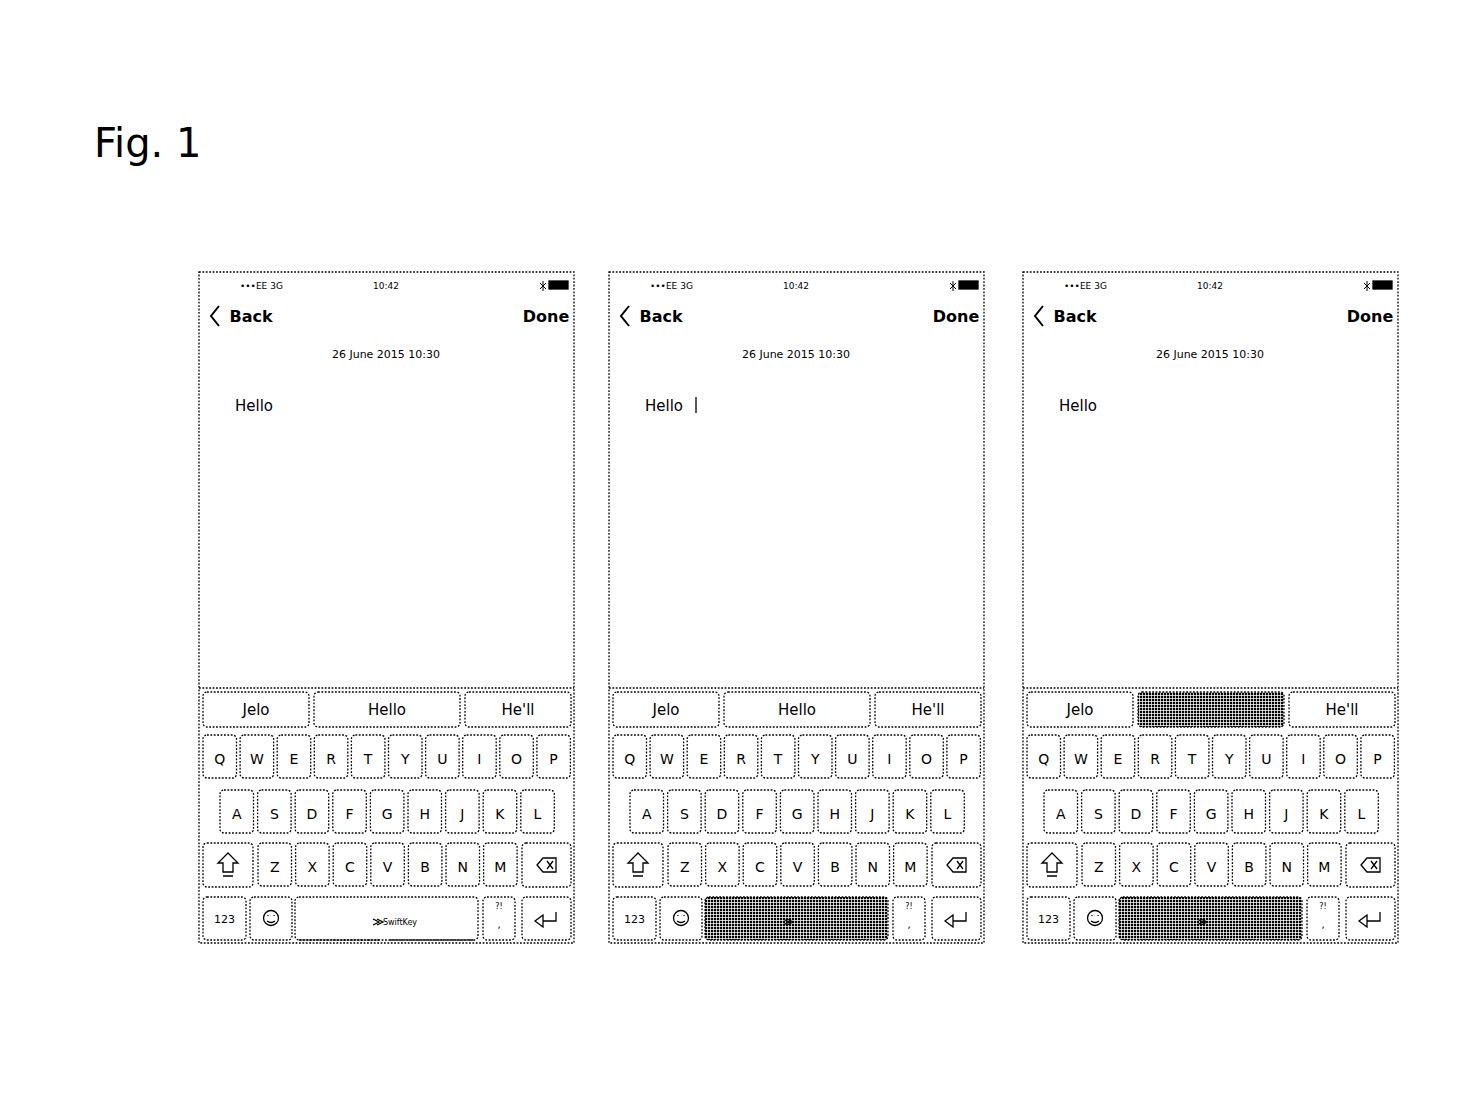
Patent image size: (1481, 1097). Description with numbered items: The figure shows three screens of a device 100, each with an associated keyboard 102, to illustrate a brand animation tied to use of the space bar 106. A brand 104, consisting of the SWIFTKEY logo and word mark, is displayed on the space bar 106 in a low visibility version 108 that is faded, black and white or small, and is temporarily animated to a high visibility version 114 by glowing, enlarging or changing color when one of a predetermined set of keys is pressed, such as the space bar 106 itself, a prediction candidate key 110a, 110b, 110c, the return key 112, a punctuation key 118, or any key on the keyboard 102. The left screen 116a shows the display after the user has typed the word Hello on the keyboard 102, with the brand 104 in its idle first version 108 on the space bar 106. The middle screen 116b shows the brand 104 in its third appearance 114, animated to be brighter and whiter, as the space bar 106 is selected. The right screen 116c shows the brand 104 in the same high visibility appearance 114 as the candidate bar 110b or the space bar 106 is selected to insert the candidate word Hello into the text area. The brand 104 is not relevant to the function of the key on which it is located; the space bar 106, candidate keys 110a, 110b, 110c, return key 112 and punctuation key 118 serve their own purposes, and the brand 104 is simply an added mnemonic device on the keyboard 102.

The device 100 is at (1366, 189).
The keyboard 102 is at (184, 774).
The brand 104 is at (395, 938).
The space bar 106 is at (433, 943).
The low visibility version of the brand 108 is at (302, 950).
The prediction candidate key 110a is at (293, 690).
The prediction candidate key 110b is at (404, 690).
The prediction candidate key 110c is at (516, 690).
The return key 112 is at (540, 942).
The high visibility version of the brand 114 is at (822, 943).
The left screen 116a is at (199, 412).
The middle screen 116b is at (756, 272).
The right screen 116c is at (1400, 406).
The punctuation key 118 is at (908, 942).